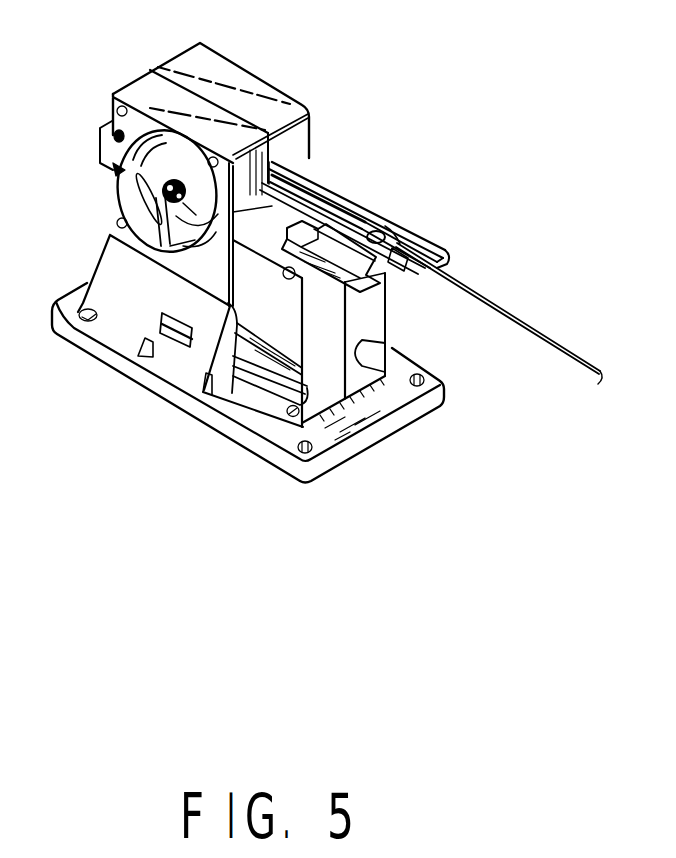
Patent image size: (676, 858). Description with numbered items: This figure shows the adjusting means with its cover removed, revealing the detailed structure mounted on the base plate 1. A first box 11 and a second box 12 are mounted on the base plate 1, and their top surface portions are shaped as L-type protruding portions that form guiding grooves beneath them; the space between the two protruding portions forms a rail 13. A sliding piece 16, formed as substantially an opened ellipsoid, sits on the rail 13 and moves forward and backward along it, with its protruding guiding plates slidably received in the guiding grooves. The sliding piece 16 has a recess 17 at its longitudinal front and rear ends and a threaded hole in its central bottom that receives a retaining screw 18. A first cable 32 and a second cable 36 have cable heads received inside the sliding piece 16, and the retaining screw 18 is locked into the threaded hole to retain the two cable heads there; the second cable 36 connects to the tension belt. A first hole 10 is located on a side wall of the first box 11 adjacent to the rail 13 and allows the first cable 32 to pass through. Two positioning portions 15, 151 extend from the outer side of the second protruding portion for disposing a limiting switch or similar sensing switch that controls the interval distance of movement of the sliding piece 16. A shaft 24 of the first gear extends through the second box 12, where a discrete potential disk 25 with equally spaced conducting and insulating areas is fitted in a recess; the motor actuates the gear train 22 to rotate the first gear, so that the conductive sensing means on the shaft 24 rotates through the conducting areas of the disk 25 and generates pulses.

The base plate 1 is at (360, 432).
The first hole 10 is at (273, 167).
The first box 11 is at (220, 64).
The second box 12 is at (136, 88).
The rail 13 is at (318, 197).
The positioning portion 15 is at (283, 238).
The positioning portion 151 is at (336, 306).
The sliding piece 16 is at (402, 285).
The recess 17 is at (399, 241).
The retaining screw 18 is at (408, 283).
The gear train 22 is at (187, 252).
The shaft 24 is at (198, 250).
The discrete potential disk 25 is at (137, 150).
The first cable 32 is at (350, 208).
The second cable 36 is at (470, 289).